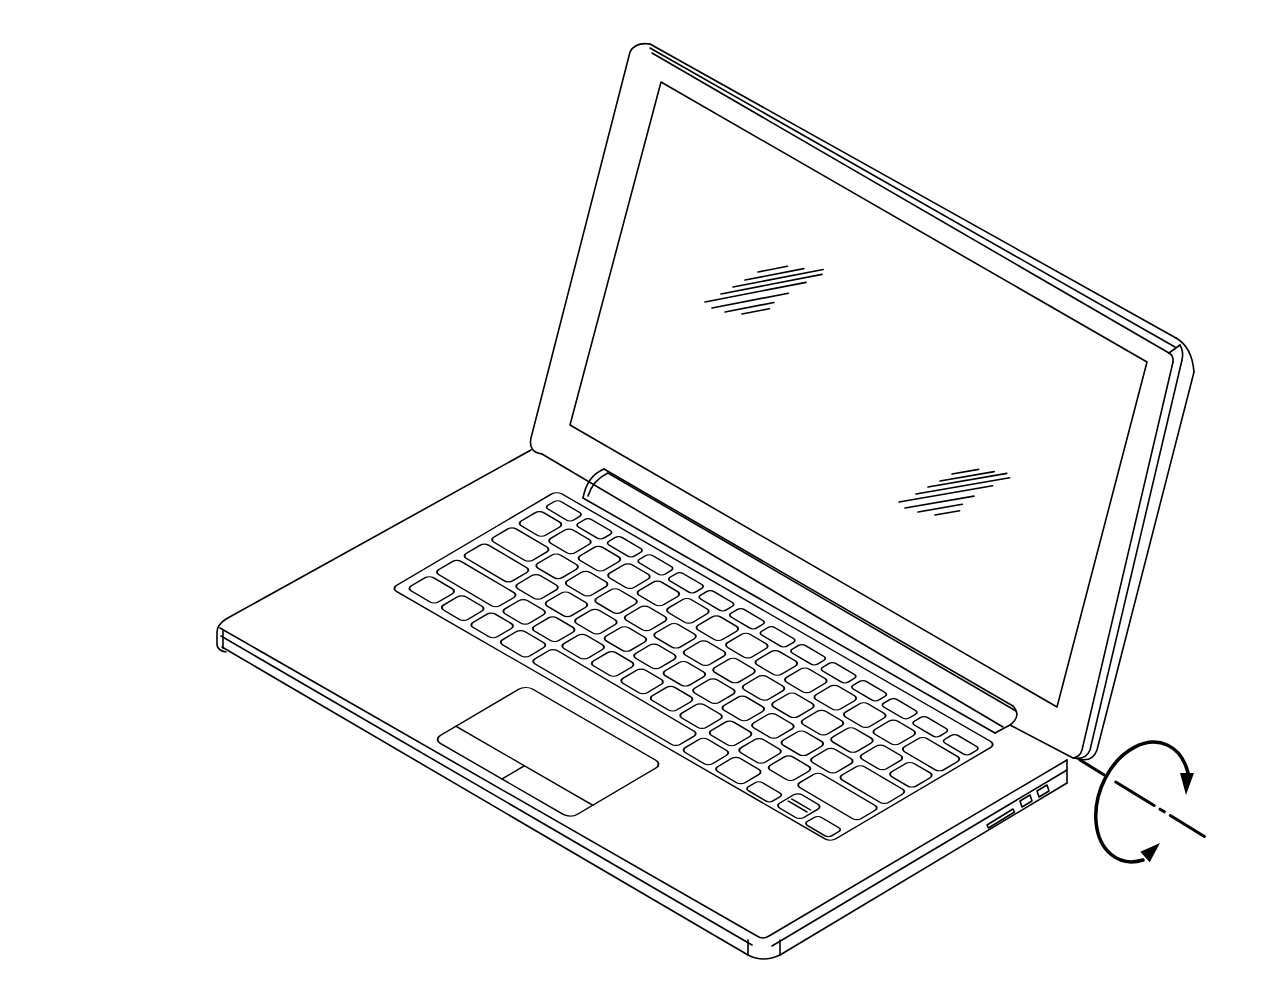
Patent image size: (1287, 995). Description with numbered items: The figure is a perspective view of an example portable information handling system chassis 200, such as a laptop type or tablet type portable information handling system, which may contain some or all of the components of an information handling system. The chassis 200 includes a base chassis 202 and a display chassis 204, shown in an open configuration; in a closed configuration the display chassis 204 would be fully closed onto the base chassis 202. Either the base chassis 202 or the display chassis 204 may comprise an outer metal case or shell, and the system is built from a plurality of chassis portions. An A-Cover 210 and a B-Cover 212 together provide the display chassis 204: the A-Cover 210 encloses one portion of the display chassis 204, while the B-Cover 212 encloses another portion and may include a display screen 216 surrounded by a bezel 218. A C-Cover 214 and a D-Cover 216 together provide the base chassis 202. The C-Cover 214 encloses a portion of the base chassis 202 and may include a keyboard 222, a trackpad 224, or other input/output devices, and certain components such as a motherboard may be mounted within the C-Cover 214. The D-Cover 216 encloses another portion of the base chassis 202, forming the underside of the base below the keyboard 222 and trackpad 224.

The portable information handling system chassis 200 is at (1140, 187).
The base chassis 202 is at (903, 912).
The display chassis 204 is at (1178, 583).
The A-Cover 210 is at (1167, 488).
The B-Cover 212 is at (1122, 337).
The C-Cover 214 is at (293, 592).
The D-Cover 216 is at (942, 275).
The bezel 218 is at (777, 140).
The keyboard 222 is at (514, 518).
The trackpad 224 is at (608, 785).